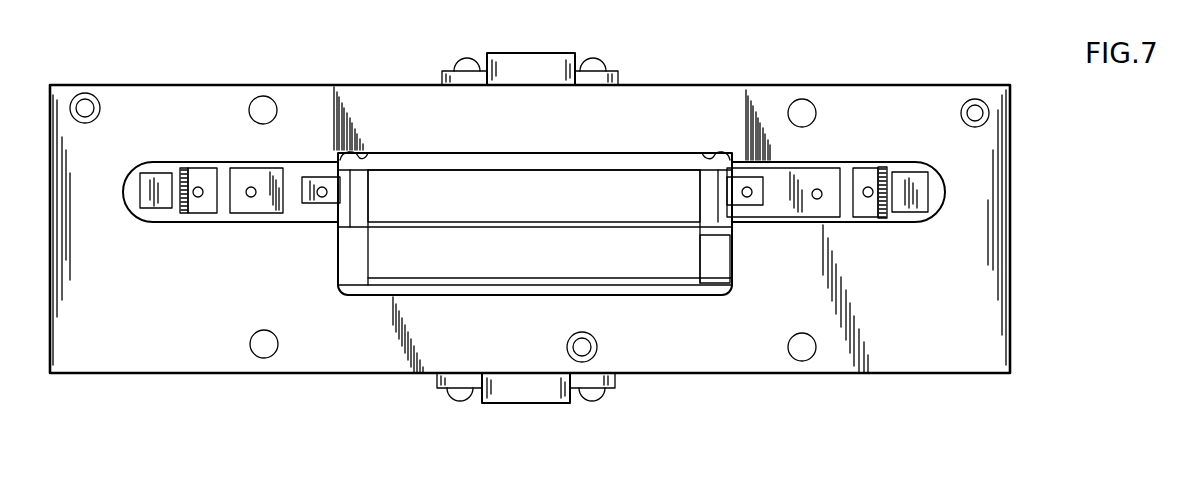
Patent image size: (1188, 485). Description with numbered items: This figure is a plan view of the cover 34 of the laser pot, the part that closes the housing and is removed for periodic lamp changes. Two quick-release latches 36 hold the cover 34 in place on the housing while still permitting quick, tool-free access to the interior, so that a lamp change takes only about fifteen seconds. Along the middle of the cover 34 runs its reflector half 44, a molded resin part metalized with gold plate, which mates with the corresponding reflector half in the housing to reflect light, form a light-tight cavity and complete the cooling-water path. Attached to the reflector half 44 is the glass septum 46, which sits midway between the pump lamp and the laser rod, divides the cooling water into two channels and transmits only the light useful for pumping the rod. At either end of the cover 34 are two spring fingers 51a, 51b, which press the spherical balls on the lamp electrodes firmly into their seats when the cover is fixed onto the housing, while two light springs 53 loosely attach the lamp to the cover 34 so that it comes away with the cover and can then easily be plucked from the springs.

The cover 34 is at (1010, 283).
The quick-release latches 36 is at (552, 62).
The reflector half 44 is at (528, 172).
The glass septum 46 is at (560, 225).
The spring finger 51a is at (160, 188).
The spring finger 51b is at (917, 183).
The light springs 53 is at (185, 175).